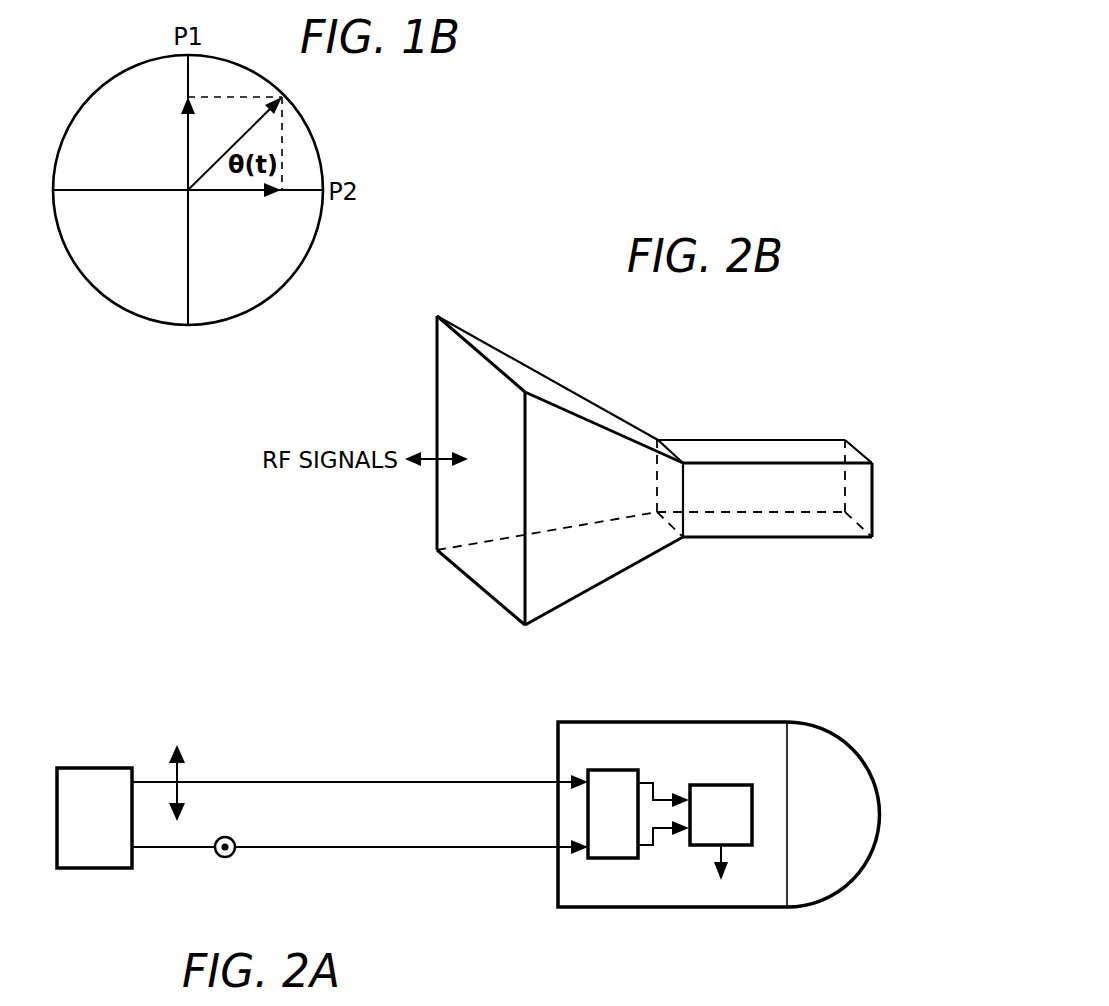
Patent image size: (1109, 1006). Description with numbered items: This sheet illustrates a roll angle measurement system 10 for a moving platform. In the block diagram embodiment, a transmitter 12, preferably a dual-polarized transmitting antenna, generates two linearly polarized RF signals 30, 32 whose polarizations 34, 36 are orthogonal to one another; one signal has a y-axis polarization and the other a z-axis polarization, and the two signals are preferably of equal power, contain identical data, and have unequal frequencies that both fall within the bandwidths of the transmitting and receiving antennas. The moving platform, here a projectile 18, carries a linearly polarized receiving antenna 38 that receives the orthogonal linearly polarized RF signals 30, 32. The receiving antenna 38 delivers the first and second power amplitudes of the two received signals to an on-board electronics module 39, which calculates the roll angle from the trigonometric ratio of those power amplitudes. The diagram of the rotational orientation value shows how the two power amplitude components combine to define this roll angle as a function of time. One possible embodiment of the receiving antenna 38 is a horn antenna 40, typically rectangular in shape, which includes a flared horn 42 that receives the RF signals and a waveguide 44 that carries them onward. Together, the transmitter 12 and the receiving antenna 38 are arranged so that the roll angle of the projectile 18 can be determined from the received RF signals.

In FIG. 2A, the system 10 is at (205, 672).
In FIG. 2A, the transmitter 12 is at (82, 768).
In FIG. 2A, the projectile 18 is at (762, 722).
In FIG. 2A, the RF signal 30 is at (440, 780).
In FIG. 2A, the RF signal 32 is at (440, 850).
In FIG. 2A, the polarization 34 is at (177, 772).
In FIG. 2A, the polarization 36 is at (225, 858).
In FIG. 2A, the receiving antenna 38 is at (613, 858).
In FIG. 2A, the on-board electronics module 39 is at (713, 785).
In FIG. 2B, the horn antenna 40 is at (654, 462).
In FIG. 2B, the flared horn 42 is at (543, 372).
In FIG. 2B, the waveguide 44 is at (800, 440).